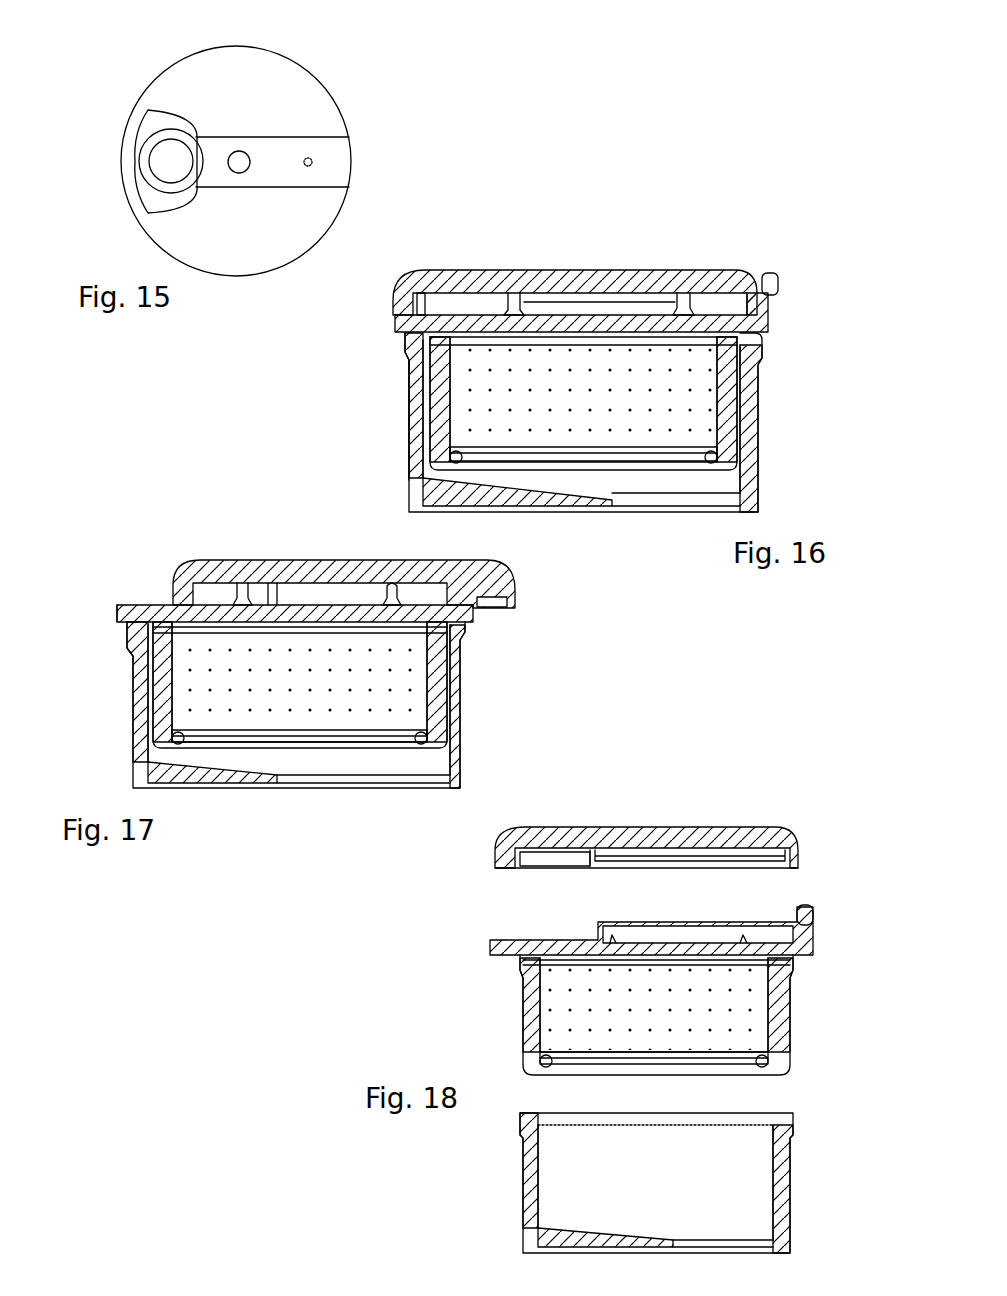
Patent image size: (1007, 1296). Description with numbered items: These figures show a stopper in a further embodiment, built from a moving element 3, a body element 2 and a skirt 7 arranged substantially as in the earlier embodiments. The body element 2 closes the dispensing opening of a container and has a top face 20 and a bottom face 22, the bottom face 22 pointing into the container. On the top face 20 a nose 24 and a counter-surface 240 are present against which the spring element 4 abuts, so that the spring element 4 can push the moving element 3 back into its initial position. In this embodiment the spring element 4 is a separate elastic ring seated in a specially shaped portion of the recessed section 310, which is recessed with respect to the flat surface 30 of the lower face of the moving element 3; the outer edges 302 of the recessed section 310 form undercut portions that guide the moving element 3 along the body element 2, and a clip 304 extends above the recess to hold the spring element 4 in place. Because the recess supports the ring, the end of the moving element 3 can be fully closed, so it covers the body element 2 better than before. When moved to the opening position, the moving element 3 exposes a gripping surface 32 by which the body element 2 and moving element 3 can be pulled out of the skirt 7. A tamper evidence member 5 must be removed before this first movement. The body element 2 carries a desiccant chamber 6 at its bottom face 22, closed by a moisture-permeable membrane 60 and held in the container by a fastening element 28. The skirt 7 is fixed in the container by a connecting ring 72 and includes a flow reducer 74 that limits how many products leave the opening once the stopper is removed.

In FIG. 16, the body element 2 is at (770, 327).
In FIG. 17, the body element 2 is at (443, 690).
In FIG. 18, the body element 2 is at (631, 990).
In FIG. 15, the moving element 3 is at (285, 90).
In FIG. 16, the moving element 3 is at (662, 290).
In FIG. 17, the moving element 3 is at (287, 573).
In FIG. 18, the moving element 3 is at (727, 840).
In FIG. 15, the spring element 4 is at (145, 143).
In FIG. 16, the spring element 4 is at (513, 297).
In FIG. 18, the spring element 4 is at (610, 831).
In FIG. 16, the tamper evidence member 5 is at (780, 281).
In FIG. 18, the tamper evidence member 5 is at (805, 915).
In FIG. 16, the desiccant chamber 6 is at (583, 404).
In FIG. 17, the desiccant chamber 6 is at (291, 687).
In FIG. 18, the desiccant chamber 6 is at (658, 1024).
In FIG. 16, the skirt 7 is at (568, 422).
In FIG. 17, the skirt 7 is at (457, 739).
In FIG. 18, the skirt 7 is at (689, 1183).
In FIG. 16, the top face 20 is at (581, 312).
In FIG. 17, the top face 20 is at (137, 604).
In FIG. 17, the bottom face 22 is at (120, 621).
In FIG. 16, the nose 24 is at (683, 296).
In FIG. 16, the fastening element 28 is at (408, 398).
In FIG. 15, the flat surface 30 is at (320, 114).
In FIG. 17, the gripping surface 32 is at (487, 612).
In FIG. 16, the moisture-permeable membrane 60 is at (637, 458).
In FIG. 17, the moisture-permeable membrane 60 is at (299, 737).
In FIG. 18, the moisture-permeable membrane 60 is at (654, 1059).
In FIG. 18, the connecting ring 72 is at (790, 1175).
In FIG. 16, the flow reducer 74 is at (575, 512).
In FIG. 17, the flow reducer 74 is at (273, 787).
In FIG. 16, the counter-surface 240 is at (557, 296).
In FIG. 15, the outer edges 302 is at (302, 190).
In FIG. 15, the clip 304 is at (313, 162).
In FIG. 15, the recessed section 310 is at (153, 202).